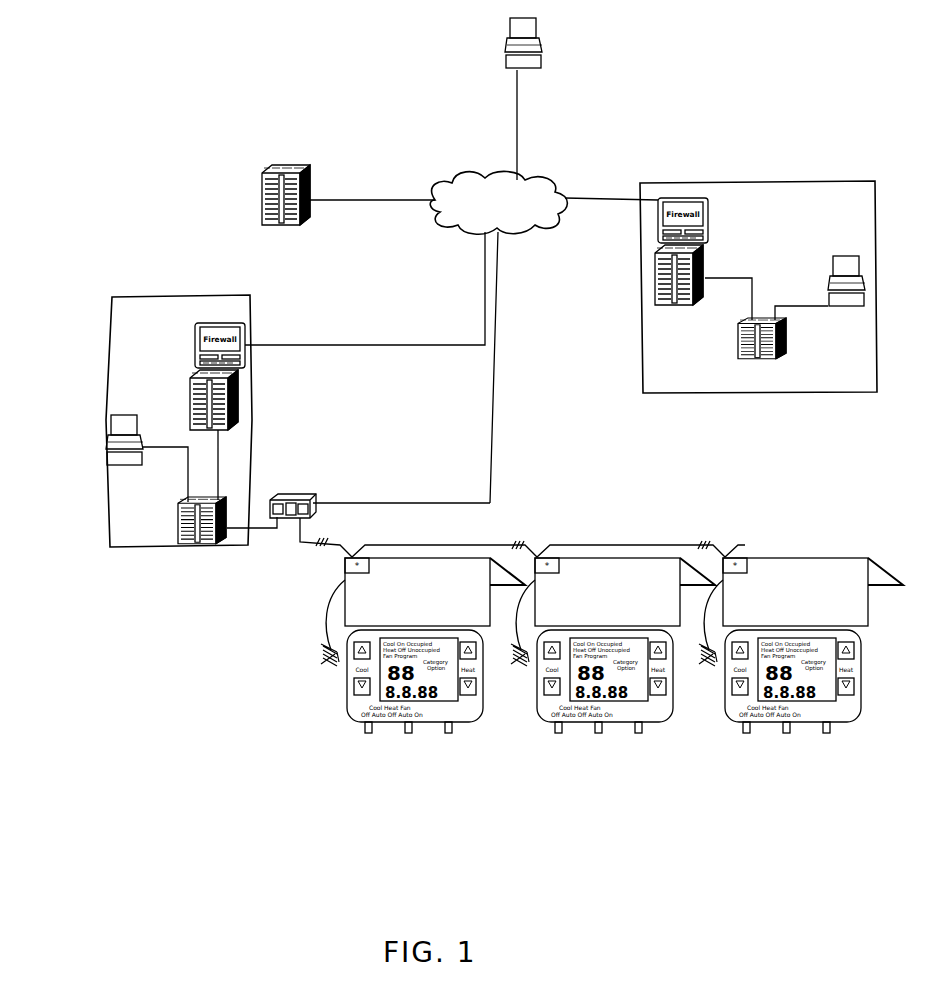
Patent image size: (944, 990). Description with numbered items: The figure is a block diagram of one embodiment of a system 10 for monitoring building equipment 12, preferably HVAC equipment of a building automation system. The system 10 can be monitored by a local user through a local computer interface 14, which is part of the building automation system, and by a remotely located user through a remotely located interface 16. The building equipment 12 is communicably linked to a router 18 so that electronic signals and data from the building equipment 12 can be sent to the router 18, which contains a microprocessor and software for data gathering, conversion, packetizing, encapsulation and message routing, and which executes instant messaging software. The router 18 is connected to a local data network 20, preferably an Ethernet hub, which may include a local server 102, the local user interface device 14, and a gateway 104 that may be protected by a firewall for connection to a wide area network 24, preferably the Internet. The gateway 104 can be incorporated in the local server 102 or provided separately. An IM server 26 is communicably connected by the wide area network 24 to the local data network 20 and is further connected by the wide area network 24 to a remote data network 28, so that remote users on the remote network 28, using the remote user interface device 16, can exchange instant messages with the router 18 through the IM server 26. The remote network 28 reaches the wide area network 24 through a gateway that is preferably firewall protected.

The system 10 is at (31, 339).
The building equipment 12 is at (436, 757).
The local computer interface 14 is at (137, 404).
The remotely located interface 16 is at (551, 40).
The router 18 is at (302, 486).
The local data network 20 is at (236, 567).
The wide area network 24 is at (555, 241).
The IM server 26 is at (250, 212).
The remote data network 28 is at (808, 178).
The local server 102 is at (178, 525).
The gateway 104 is at (192, 398).